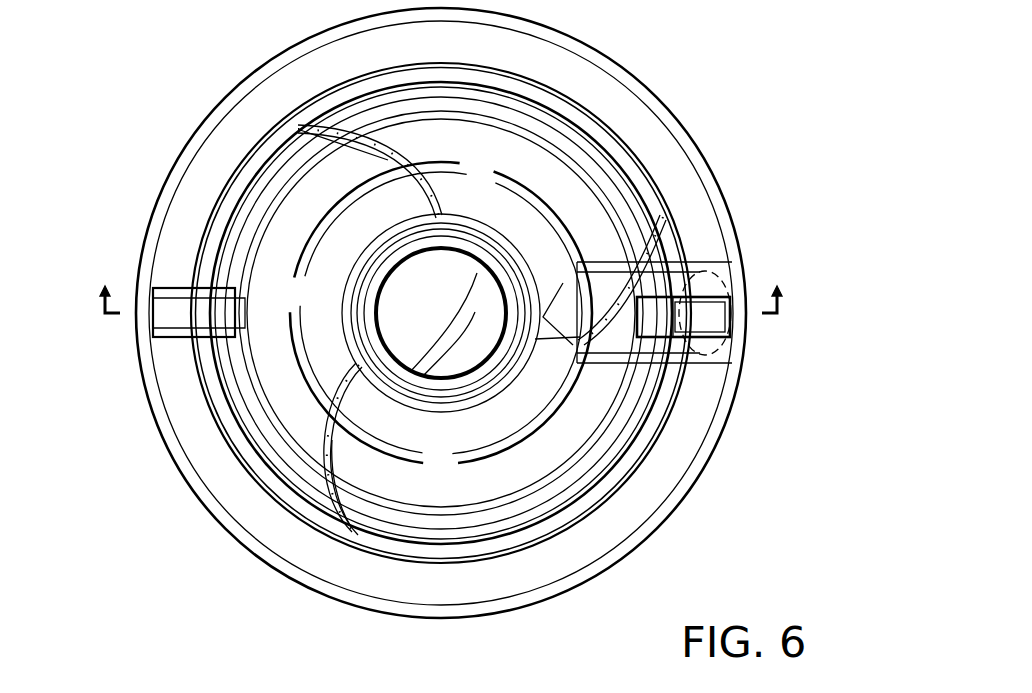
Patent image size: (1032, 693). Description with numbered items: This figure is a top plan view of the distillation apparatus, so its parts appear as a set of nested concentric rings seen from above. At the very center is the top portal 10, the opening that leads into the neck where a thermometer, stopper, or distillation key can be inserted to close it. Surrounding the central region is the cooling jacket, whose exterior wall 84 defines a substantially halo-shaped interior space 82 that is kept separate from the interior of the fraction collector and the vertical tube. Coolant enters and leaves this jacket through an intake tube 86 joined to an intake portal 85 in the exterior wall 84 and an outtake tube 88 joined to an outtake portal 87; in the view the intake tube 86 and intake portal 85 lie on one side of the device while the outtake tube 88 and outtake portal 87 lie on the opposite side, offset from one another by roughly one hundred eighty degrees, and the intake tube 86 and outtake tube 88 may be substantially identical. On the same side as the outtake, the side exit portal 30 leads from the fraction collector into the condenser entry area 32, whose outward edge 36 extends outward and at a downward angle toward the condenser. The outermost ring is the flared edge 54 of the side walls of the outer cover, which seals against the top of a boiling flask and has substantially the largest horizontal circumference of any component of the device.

The top portal 10 is at (497, 282).
The side exit portal 30 is at (563, 283).
The condenser entry area 32 is at (697, 263).
The outward edge 36 is at (723, 284).
The flared edge 54 is at (682, 489).
The interior space 82 is at (300, 208).
The exterior wall 84 is at (318, 162).
The intake portal 85 is at (245, 312).
The intake tube 86 is at (172, 308).
The outtake portal 87 is at (640, 318).
The outtake tube 88 is at (713, 320).